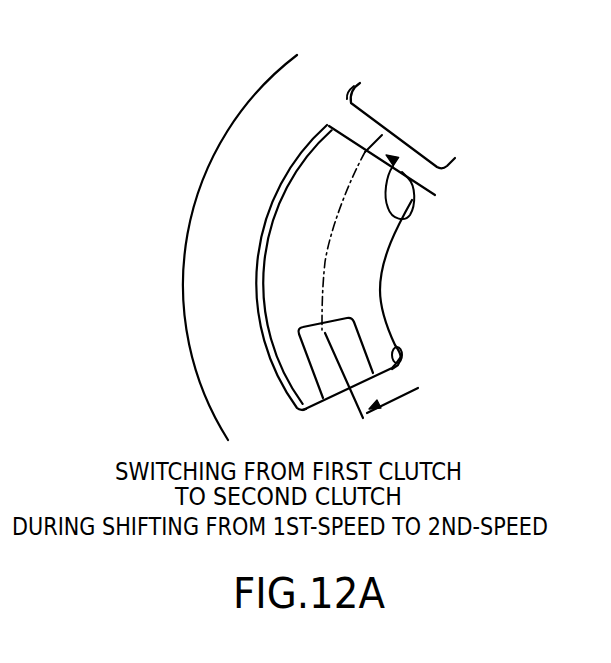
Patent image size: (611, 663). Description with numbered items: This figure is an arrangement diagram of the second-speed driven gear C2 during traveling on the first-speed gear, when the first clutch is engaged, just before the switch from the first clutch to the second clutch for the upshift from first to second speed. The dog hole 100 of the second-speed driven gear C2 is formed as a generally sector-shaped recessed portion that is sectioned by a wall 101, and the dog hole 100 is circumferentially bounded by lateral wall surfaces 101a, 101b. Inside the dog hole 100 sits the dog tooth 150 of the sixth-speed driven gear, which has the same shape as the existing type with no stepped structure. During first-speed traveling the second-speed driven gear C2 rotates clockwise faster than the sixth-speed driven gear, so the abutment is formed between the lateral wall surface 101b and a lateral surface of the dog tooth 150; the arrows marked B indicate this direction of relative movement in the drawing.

The dog hole 100 is at (290, 255).
The wall 101 is at (366, 128).
The lateral wall surface 101a is at (402, 219).
The lateral wall surface 101b is at (403, 350).
The dog tooth 150 is at (345, 340).
The second-speed driven gear C2 is at (233, 167).
The movement direction B is at (418, 282).